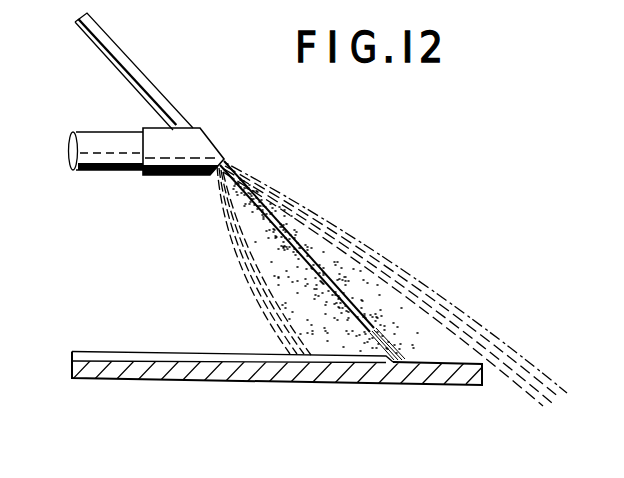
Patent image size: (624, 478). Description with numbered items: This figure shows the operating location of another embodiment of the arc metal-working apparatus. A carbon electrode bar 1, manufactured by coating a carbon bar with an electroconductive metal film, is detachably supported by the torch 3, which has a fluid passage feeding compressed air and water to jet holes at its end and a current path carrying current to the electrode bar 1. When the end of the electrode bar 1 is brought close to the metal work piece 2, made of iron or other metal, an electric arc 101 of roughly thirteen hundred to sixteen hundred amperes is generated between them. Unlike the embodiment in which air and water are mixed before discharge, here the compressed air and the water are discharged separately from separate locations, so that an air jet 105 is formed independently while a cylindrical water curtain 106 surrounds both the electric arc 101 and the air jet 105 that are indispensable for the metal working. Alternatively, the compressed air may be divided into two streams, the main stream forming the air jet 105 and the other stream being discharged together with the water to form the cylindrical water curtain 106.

The carbon electrode bar 1 is at (152, 85).
The metal work piece 2 is at (443, 378).
The torch 3 is at (106, 133).
The electric arc 101 is at (397, 340).
The air jet 105 is at (353, 293).
The cylindrical water curtain 106 is at (337, 235).